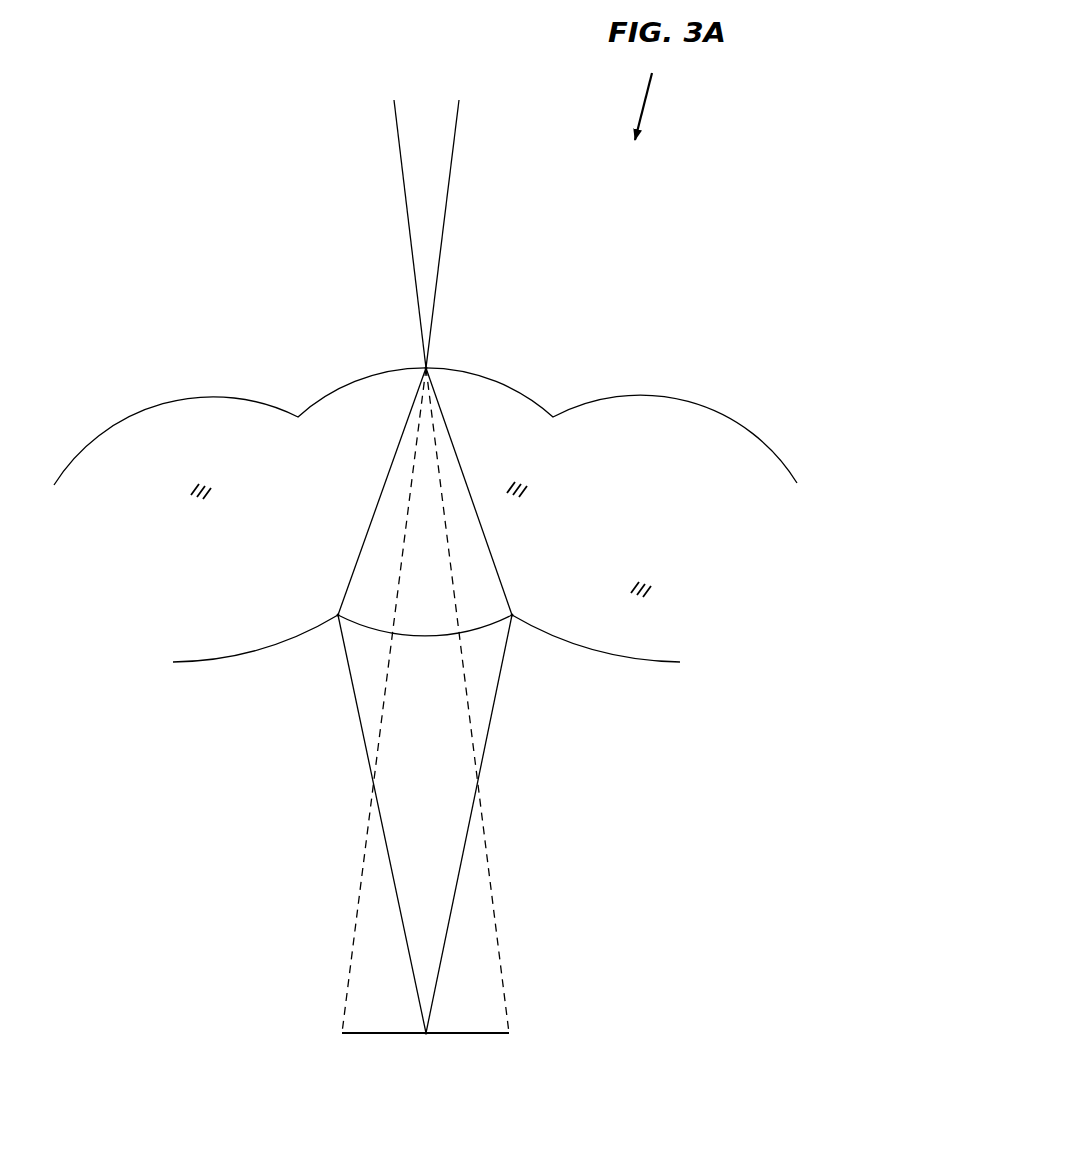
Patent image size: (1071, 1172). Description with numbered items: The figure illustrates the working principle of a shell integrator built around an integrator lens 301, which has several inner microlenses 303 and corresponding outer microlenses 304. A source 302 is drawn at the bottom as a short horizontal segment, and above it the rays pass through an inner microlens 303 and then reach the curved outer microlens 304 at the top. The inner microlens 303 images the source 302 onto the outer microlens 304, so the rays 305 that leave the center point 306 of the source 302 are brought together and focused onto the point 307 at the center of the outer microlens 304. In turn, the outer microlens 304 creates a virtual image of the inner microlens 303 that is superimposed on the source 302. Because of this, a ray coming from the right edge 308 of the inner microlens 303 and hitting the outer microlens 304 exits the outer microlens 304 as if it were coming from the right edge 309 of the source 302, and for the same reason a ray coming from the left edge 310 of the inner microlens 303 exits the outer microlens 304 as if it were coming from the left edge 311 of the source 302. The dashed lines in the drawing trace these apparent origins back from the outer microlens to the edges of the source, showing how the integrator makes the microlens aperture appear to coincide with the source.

The integrator lens 301 is at (116, 224).
The source 302 is at (476, 1045).
The inner microlens 303 is at (421, 650).
The outer microlens 304 is at (513, 361).
The rays 305 is at (343, 707).
The center point 306 is at (417, 1045).
The point 307 is at (414, 357).
The right edge 308 is at (525, 601).
The right edge 309 is at (522, 1024).
The left edge 310 is at (330, 603).
The left edge 311 is at (334, 1024).